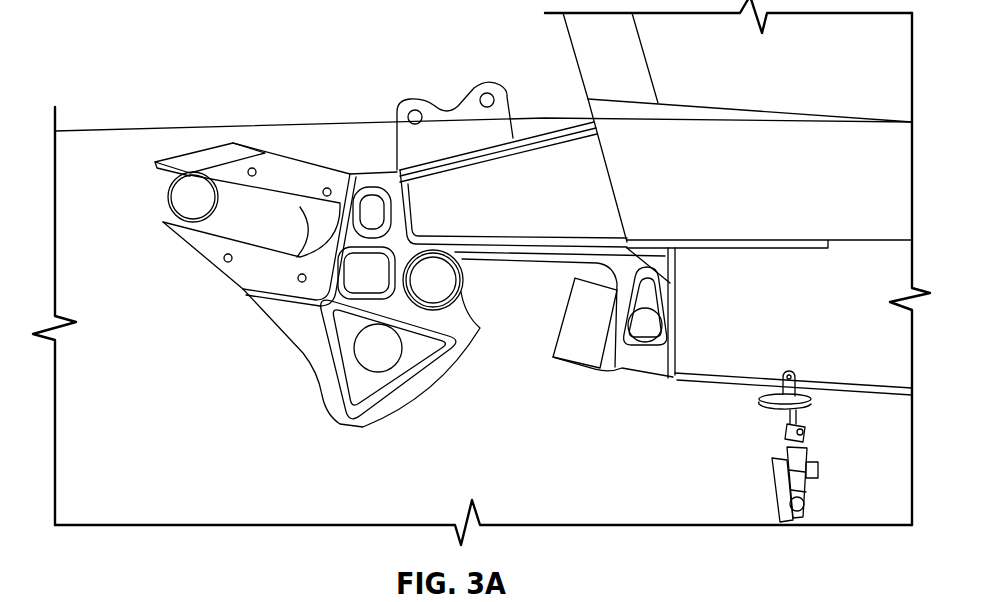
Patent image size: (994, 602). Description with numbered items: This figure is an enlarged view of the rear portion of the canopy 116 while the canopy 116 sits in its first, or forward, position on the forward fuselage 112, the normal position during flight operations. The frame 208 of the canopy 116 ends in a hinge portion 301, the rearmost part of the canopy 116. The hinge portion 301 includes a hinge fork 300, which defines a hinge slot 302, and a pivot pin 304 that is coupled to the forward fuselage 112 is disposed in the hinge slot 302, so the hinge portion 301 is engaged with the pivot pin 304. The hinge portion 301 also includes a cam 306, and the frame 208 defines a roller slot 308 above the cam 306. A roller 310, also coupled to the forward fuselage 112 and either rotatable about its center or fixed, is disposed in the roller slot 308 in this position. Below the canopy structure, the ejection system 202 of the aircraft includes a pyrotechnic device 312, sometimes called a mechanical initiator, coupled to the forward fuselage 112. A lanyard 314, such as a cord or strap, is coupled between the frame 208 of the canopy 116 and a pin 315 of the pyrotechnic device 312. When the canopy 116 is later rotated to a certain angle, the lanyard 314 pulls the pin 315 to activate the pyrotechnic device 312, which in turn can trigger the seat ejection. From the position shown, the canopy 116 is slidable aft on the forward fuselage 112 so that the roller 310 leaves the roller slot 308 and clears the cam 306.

The forward fuselage 112 is at (78, 128).
The canopy 116 is at (706, 68).
The ejection system 202 is at (740, 436).
The frame 208 is at (558, 160).
The hinge fork 300 is at (281, 172).
The hinge portion 301 is at (175, 97).
The hinge slot 302 is at (239, 190).
The pivot pin 304 is at (183, 198).
The cam 306 is at (408, 403).
The roller slot 308 is at (448, 246).
The roller 310 is at (465, 283).
The pyrotechnic device 312 is at (820, 470).
The lanyard 314 is at (817, 410).
The pin 315 is at (800, 437).